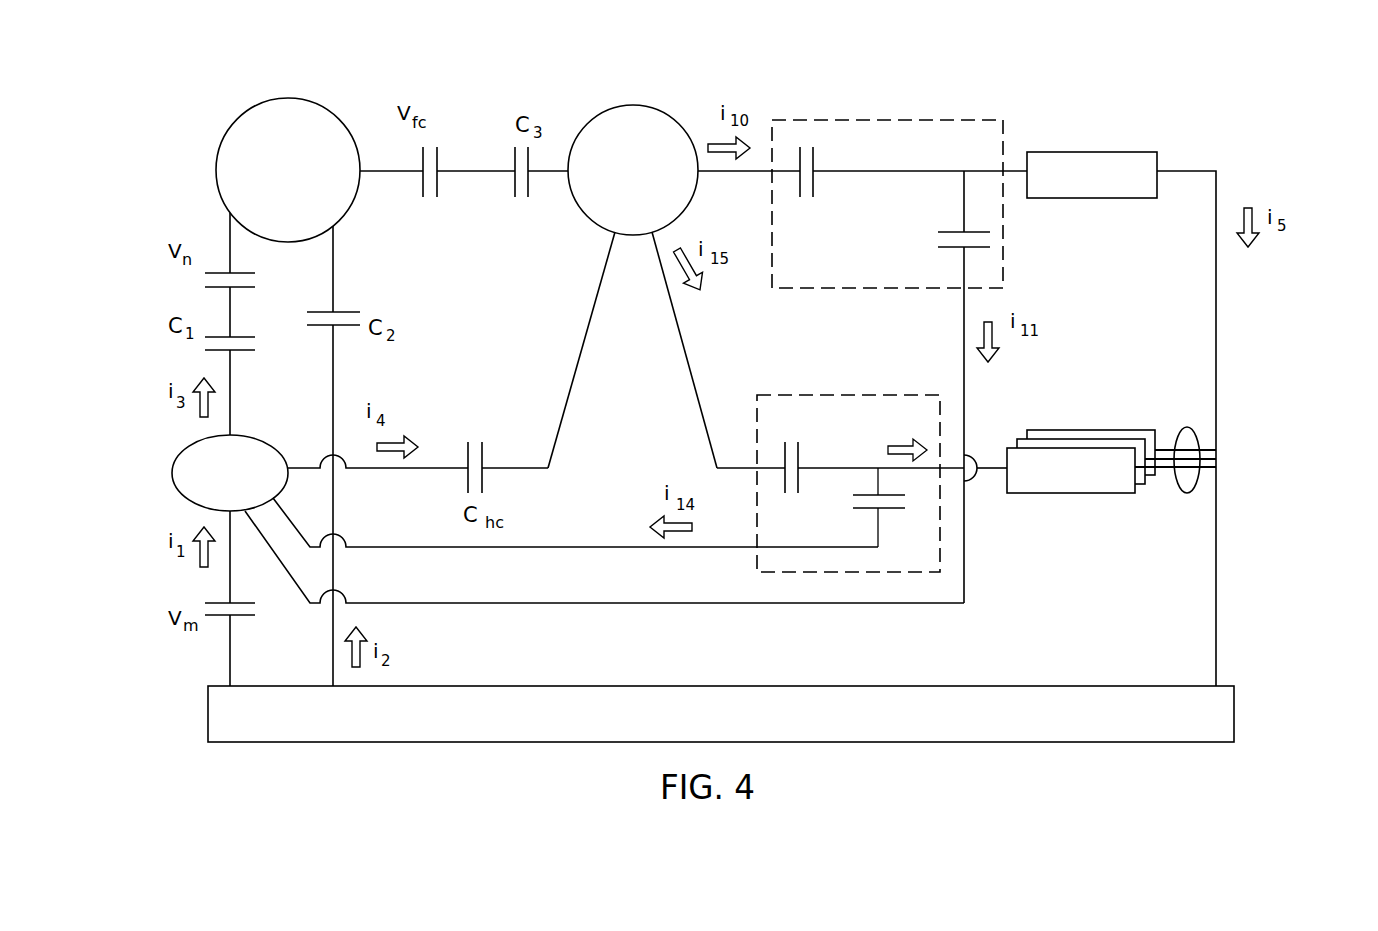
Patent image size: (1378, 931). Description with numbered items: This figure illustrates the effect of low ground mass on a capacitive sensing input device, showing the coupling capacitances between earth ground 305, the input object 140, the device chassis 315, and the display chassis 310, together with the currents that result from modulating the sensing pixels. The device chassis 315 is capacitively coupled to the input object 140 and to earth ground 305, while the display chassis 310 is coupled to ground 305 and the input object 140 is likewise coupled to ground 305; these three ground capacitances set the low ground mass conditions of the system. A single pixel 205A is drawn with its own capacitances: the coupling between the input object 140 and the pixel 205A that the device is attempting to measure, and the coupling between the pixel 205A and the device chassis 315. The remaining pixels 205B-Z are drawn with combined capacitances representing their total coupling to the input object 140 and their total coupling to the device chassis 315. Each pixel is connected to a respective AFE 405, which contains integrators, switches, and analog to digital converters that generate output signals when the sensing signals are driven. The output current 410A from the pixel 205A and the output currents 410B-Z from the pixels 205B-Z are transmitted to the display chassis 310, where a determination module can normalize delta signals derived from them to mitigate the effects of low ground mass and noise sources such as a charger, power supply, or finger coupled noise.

The earth ground 305 is at (268, 215).
The input object 140 is at (608, 208).
The device chassis 315 is at (172, 470).
The pixel 205A is at (905, 120).
The pixels 205B-Z is at (845, 395).
The AFEs 405 is at (1143, 188).
The output current 410A is at (1185, 170).
The output currents 410B-Z is at (1198, 445).
The display chassis 310 is at (823, 725).